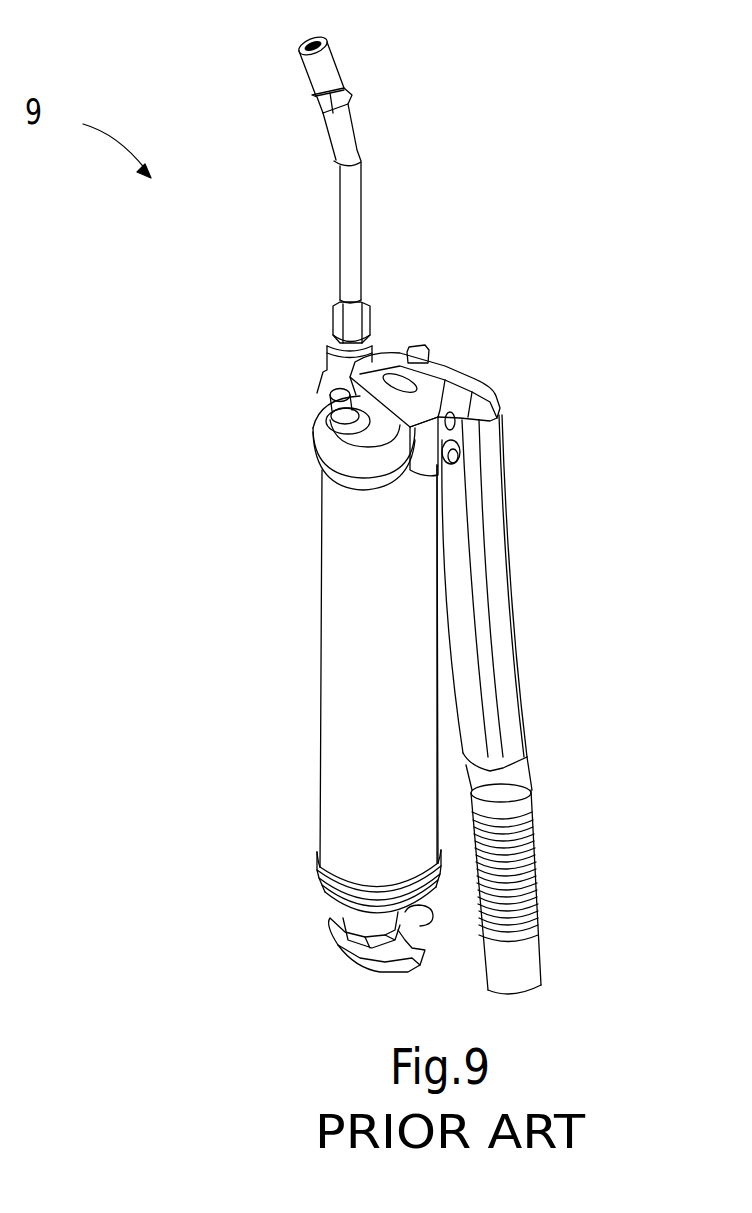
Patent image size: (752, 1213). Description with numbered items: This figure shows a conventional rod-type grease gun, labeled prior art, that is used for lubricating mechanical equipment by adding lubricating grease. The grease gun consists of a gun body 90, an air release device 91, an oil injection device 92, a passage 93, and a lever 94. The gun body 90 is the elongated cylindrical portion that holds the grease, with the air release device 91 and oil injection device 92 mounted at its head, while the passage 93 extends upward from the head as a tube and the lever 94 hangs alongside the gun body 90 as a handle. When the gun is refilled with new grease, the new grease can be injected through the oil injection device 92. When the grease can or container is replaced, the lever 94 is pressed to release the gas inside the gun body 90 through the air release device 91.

The gun body 90 is at (332, 565).
The air release device 91 is at (330, 418).
The oil injection device 92 is at (428, 352).
The passage 93 is at (350, 268).
The lever 94 is at (493, 487).